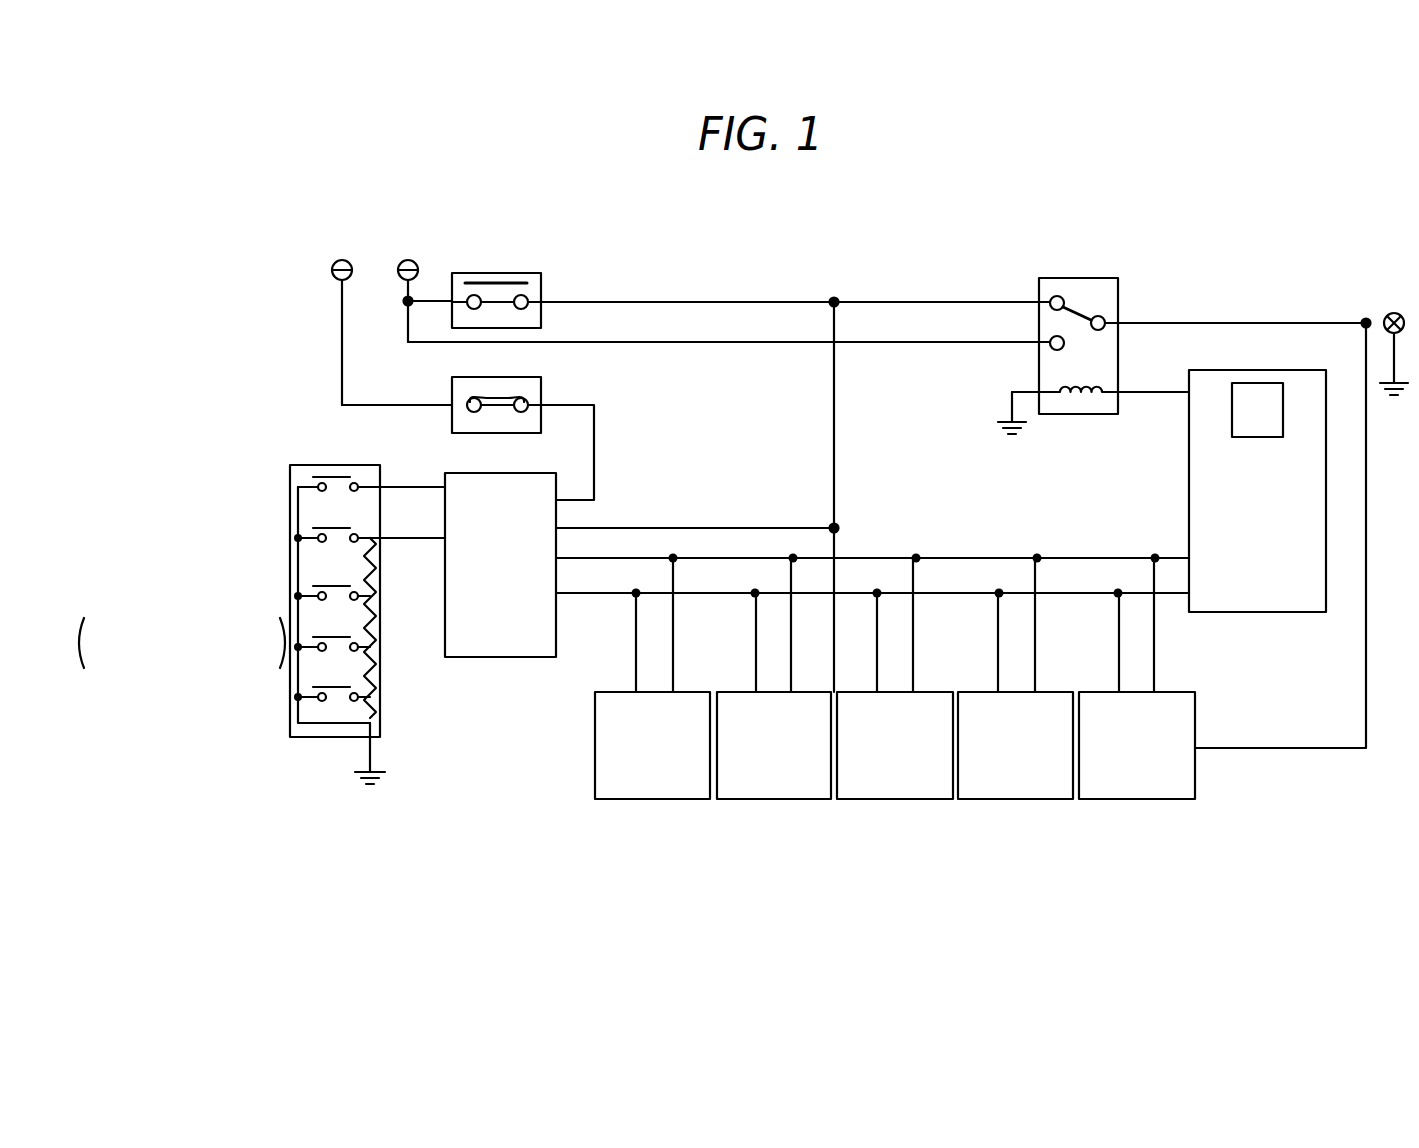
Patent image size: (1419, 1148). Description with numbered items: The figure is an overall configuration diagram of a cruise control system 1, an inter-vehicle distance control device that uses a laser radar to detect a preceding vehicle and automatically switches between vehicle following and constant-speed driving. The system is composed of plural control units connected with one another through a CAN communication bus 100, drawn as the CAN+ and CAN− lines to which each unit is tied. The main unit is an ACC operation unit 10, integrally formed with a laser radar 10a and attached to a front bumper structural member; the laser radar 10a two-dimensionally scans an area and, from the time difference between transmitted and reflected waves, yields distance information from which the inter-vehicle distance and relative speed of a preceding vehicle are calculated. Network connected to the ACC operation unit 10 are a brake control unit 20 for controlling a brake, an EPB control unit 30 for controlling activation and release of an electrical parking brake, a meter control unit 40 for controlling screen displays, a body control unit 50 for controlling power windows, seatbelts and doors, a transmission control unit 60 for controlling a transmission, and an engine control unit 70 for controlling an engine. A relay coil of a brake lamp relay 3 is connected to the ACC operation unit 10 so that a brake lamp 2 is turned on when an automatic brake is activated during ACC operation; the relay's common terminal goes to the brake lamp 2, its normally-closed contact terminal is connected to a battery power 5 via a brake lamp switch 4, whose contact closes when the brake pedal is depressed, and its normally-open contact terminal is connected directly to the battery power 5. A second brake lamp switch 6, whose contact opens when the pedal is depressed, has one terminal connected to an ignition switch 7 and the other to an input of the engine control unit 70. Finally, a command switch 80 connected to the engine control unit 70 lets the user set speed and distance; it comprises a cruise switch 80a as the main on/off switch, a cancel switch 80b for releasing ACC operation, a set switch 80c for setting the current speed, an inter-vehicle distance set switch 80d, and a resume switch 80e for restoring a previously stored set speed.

The cruise control system 1 is at (905, 246).
The brake lamp 2 is at (1393, 312).
The brake lamp relay 3 is at (1100, 278).
The brake lamp switch 4 is at (528, 274).
The battery power (+B) 5 is at (399, 275).
The brake lamp switch 6 is at (528, 378).
The ignition (IGN) switch 7 is at (332, 268).
The ACC operation unit 10 is at (1258, 516).
The laser radar 10a is at (1283, 388).
The brake control unit 20 is at (1104, 799).
The EPB control unit 30 is at (984, 799).
The meter control unit 40 is at (862, 799).
The body control unit 50 is at (741, 799).
The transmission control unit 60 is at (621, 799).
The engine control unit 70 is at (525, 657).
The command switch 80 is at (320, 465).
The cruise switch 80a is at (352, 476).
The cancel switch 80b is at (352, 527).
The set switch 80c is at (352, 585).
The inter-vehicle distance set switch 80d is at (352, 636).
The resume switch 80e is at (352, 686).
The CAN communication bus 100 is at (878, 530).